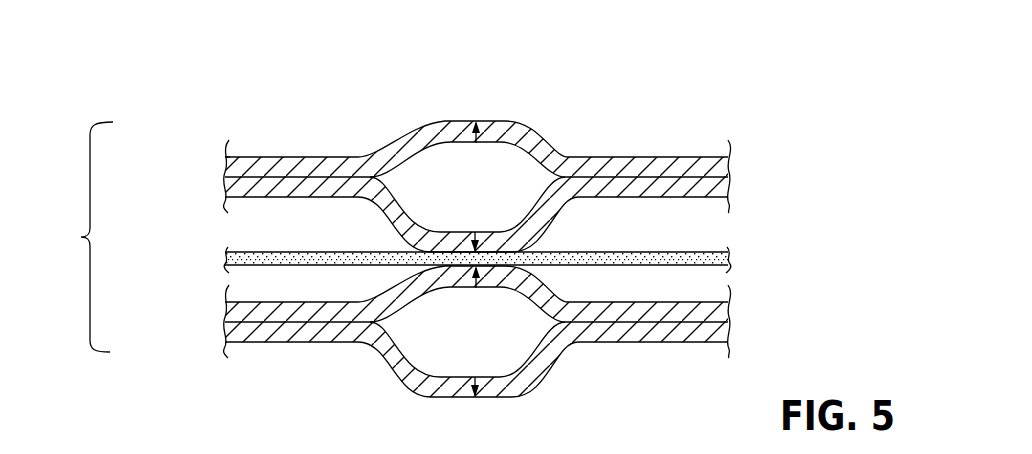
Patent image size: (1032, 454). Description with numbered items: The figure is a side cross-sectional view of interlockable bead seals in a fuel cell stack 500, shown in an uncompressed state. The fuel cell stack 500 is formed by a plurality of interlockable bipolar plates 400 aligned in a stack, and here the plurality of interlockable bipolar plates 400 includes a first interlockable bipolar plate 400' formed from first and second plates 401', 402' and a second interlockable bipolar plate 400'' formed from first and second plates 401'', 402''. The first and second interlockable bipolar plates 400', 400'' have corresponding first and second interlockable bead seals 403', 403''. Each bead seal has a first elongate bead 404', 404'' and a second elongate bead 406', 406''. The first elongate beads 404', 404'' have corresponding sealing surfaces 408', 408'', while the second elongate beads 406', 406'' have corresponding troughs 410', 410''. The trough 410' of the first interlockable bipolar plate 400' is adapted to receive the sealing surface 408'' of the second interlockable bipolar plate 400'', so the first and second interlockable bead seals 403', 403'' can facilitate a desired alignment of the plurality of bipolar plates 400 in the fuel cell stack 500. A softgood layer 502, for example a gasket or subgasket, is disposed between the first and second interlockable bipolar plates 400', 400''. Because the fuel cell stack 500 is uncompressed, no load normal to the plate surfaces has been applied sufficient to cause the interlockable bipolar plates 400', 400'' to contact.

The interlockable bipolar plates 400 is at (70, 237).
The first interlockable bipolar plate 400' is at (495, 145).
The second interlockable bipolar plate 400'' is at (498, 341).
The first plate 401' is at (540, 149).
The second plate 402' is at (540, 214).
The first plate 401'' is at (543, 294).
The second plate 402'' is at (543, 359).
The first interlockable bead seal 403' is at (479, 135).
The second interlockable bead seal 403'' is at (535, 352).
The first elongate bead 404' is at (438, 127).
The first elongate bead 404'' is at (426, 284).
The second elongate bead 406' is at (430, 224).
The second elongate bead 406'' is at (431, 369).
The sealing surface 408' is at (511, 162).
The sealing surface 408'' is at (514, 307).
The trough 410' is at (443, 207).
The trough 410'' is at (441, 352).
The fuel cell stack 500 is at (584, 102).
The softgood layer 502 is at (728, 257).